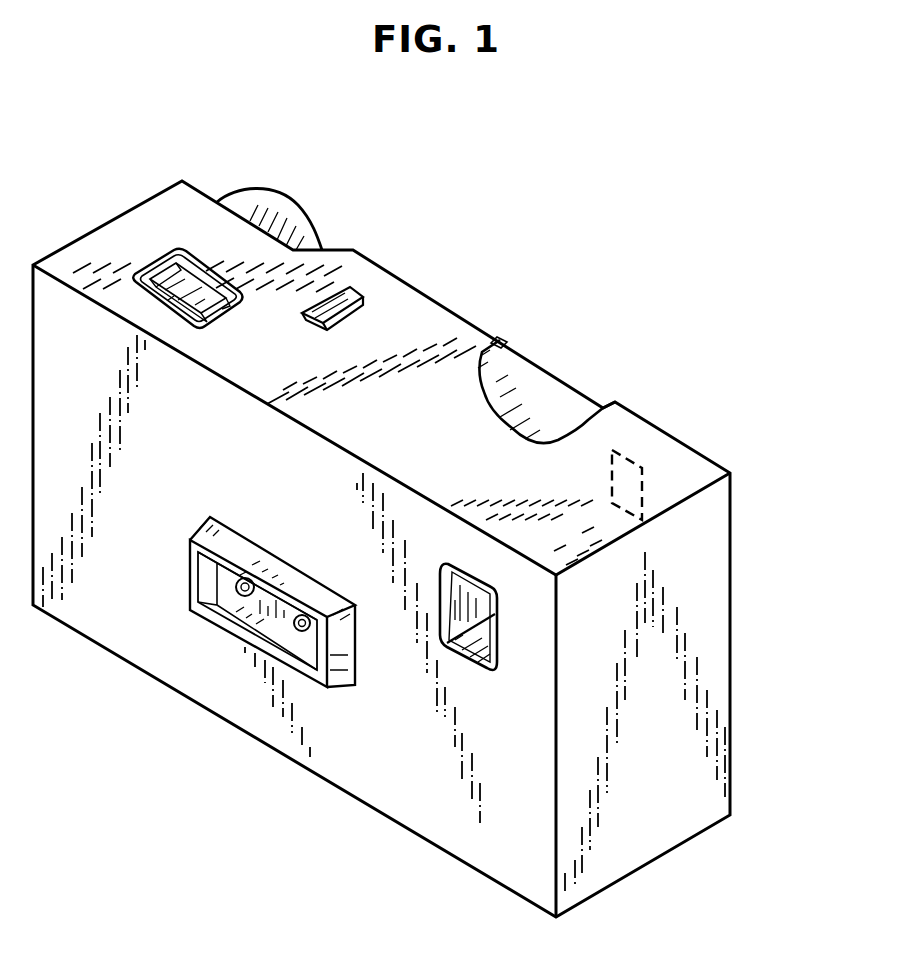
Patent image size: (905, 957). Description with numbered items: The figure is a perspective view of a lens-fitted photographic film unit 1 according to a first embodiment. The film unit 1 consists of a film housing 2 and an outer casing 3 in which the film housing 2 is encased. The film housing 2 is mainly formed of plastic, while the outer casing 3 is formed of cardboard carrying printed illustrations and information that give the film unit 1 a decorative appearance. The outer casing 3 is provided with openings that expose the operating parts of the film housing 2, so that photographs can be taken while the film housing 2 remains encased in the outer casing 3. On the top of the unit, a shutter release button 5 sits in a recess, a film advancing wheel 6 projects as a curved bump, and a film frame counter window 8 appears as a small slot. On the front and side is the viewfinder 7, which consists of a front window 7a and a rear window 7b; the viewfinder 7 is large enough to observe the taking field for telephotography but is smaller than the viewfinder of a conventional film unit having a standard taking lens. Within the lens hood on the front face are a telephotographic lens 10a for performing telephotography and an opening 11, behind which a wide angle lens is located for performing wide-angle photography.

The lens-fitted photographic film unit 1 is at (642, 257).
The film housing 2 is at (559, 378).
The outer casing 3 is at (483, 321).
The shutter release button 5 is at (170, 279).
The film advancing wheel 6 is at (266, 222).
The viewfinder 7 is at (638, 560).
The front window 7a is at (486, 633).
The rear window 7b is at (642, 500).
The film frame counter window 8 is at (338, 287).
The telephotographic lens 10a is at (238, 594).
The opening 11 is at (306, 630).